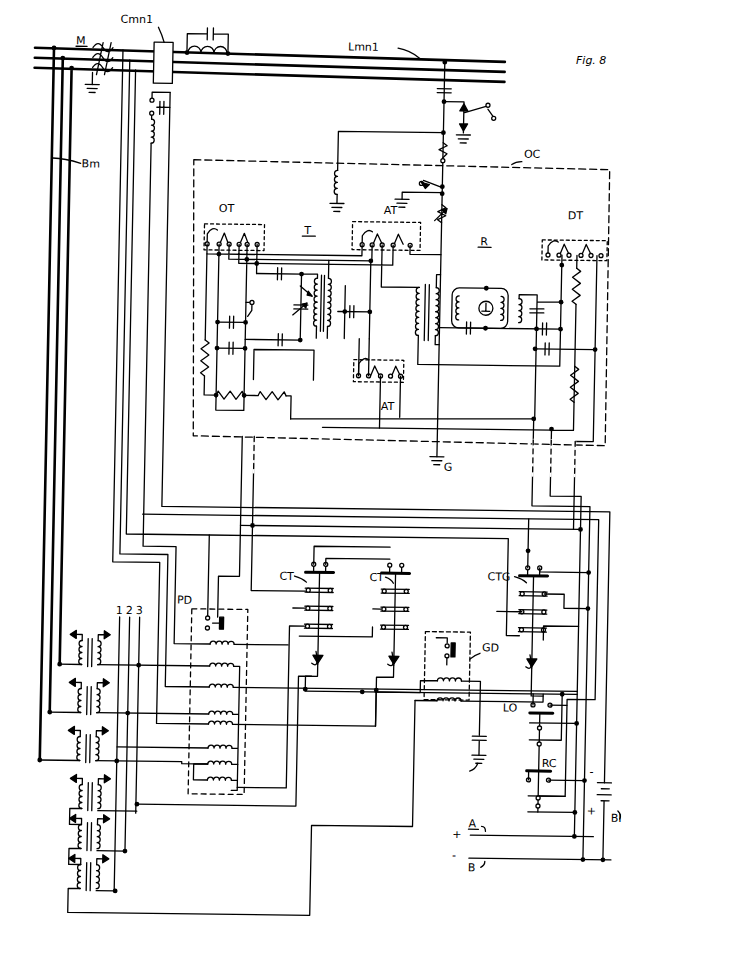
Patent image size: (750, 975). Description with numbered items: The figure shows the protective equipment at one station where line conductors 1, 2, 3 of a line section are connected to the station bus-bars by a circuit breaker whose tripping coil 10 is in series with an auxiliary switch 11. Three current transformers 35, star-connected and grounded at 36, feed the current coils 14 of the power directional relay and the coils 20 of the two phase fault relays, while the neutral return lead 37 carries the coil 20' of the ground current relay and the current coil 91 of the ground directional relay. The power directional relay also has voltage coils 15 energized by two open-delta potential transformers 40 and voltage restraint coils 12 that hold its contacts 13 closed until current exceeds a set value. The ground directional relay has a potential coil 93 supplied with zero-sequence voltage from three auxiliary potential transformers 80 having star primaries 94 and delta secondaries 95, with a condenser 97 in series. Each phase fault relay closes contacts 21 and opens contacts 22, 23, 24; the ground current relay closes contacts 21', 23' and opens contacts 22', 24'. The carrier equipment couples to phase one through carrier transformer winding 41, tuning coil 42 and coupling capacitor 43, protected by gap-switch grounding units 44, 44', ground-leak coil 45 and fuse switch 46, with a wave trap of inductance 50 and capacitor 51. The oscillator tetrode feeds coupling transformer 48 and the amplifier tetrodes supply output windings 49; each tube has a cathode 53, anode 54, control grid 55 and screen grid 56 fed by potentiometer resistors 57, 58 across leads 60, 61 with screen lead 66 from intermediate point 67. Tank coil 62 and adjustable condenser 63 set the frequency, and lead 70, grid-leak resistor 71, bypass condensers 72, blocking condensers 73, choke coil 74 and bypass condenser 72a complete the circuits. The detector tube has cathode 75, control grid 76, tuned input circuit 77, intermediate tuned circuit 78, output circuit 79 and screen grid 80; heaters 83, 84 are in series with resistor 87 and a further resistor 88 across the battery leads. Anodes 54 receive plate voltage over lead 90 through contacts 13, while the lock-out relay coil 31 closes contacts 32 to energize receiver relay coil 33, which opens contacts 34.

The line conductor 1 is at (263, 396).
The line conductor 2 is at (263, 372).
The line conductor 3 is at (264, 348).
The tripping coil 10 is at (153, 140).
The auxiliary switch 11 is at (168, 105).
The voltage restraint coil 12 is at (221, 777).
The contacts 13 is at (235, 622).
The current coil 14 is at (242, 644).
The voltage coil 15 is at (222, 666).
The actuating current coil 20 is at (364, 636).
The actuating coil 20' is at (544, 631).
The contacts 21 is at (381, 563).
The contacts 21' is at (558, 547).
The contacts 22 is at (363, 606).
The contacts 22' is at (507, 605).
The contacts 23 is at (333, 703).
The interlocking contacts 23' is at (540, 644).
The contacts 24 is at (383, 588).
The contacts 24' is at (567, 595).
The actuating coil 31 is at (548, 740).
The contacts 32 is at (548, 722).
The actuating coil 33 is at (549, 800).
The contacts 34 is at (549, 777).
The current transformer 35 is at (106, 47).
The ground 36 is at (94, 94).
The neutral grounded return lead 37 is at (418, 698).
The potential transformer 40 is at (123, 693).
The carrier transformer winding 41 is at (443, 295).
The tuning coil 42 is at (450, 211).
The coupling capacitor 43 is at (437, 85).
The gap-switch grounding unit 44 is at (469, 115).
The gap-switch grounding unit 44' is at (413, 197).
The ground-leak coil 45 is at (342, 178).
The fuse switch 46 is at (441, 149).
The coupling transformer 48 is at (338, 284).
The output winding 49 is at (424, 281).
The inductance 50 is at (230, 49).
The capacitor 51 is at (210, 25).
The hot cathode 53 is at (223, 222).
The anode 54 is at (265, 239).
The control grid 55 is at (208, 228).
The screen grid 56 is at (263, 226).
The resistor 57 is at (223, 393).
The resistor 58 is at (285, 392).
The lead 60 is at (330, 425).
The common lead 61 is at (293, 417).
The inductance coil 62 is at (303, 284).
The adjustable condenser 63 is at (299, 301).
The lead 66 is at (249, 276).
The intermediate point 67 is at (240, 410).
The lead 70 is at (316, 364).
The grid-leak resistor 71 is at (209, 352).
The bypass condenser 72 is at (235, 313).
The bypass condenser 72a is at (355, 298).
The blocking condenser 73 is at (283, 274).
The choke coil 74 is at (259, 308).
The cathode 75 is at (565, 236).
The control grid 76 is at (552, 235).
The tuned input circuit 77 is at (526, 291).
The intermediate tuned circuit 78 is at (480, 291).
The output circuit 79 is at (604, 381).
The screen grid 80 is at (605, 237).
The filamentary heater 83 is at (248, 228).
The filamentary heater 84 is at (592, 237).
The resistor 87 is at (579, 375).
The resistor 88 is at (580, 296).
The lead 90 is at (259, 449).
The current coil 91 is at (462, 696).
The potential coil 93 is at (448, 670).
The primary winding 94 is at (85, 820).
The secondary winding 95 is at (90, 802).
The condenser 97 is at (486, 735).